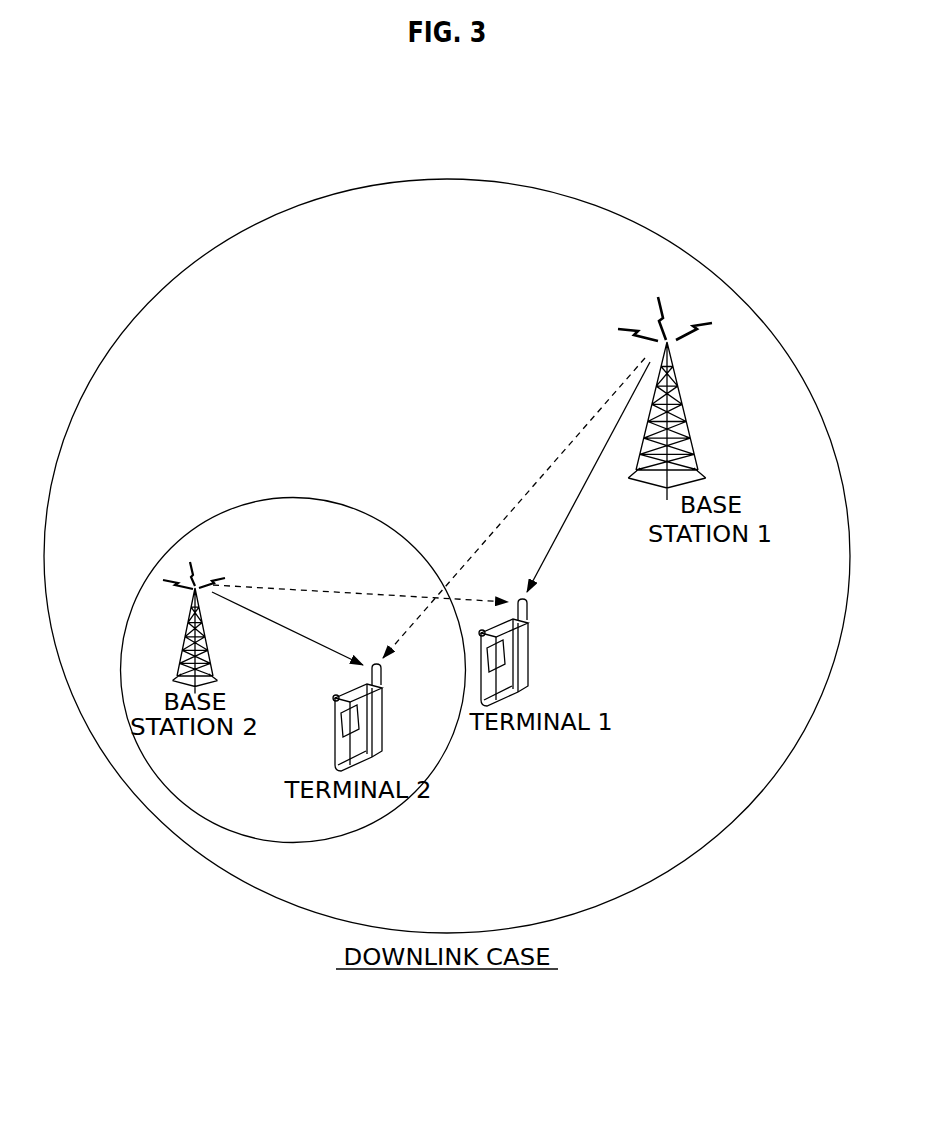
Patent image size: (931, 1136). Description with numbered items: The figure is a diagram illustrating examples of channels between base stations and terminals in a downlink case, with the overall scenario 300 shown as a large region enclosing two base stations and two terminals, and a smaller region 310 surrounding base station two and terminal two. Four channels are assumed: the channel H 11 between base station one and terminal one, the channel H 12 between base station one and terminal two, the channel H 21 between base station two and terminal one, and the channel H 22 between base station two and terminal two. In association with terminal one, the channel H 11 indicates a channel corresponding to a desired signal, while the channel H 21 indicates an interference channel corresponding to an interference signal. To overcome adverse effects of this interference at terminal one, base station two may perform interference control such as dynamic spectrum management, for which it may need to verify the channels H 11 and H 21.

The downlink multi-cell wireless communication system 300 is at (447, 178).
The cell of base station 2 310 is at (293, 497).
The channel H11 11 is at (588, 477).
The channel H12 12 is at (514, 508).
The channel H21 21 is at (360, 583).
The channel H22 22 is at (287, 628).